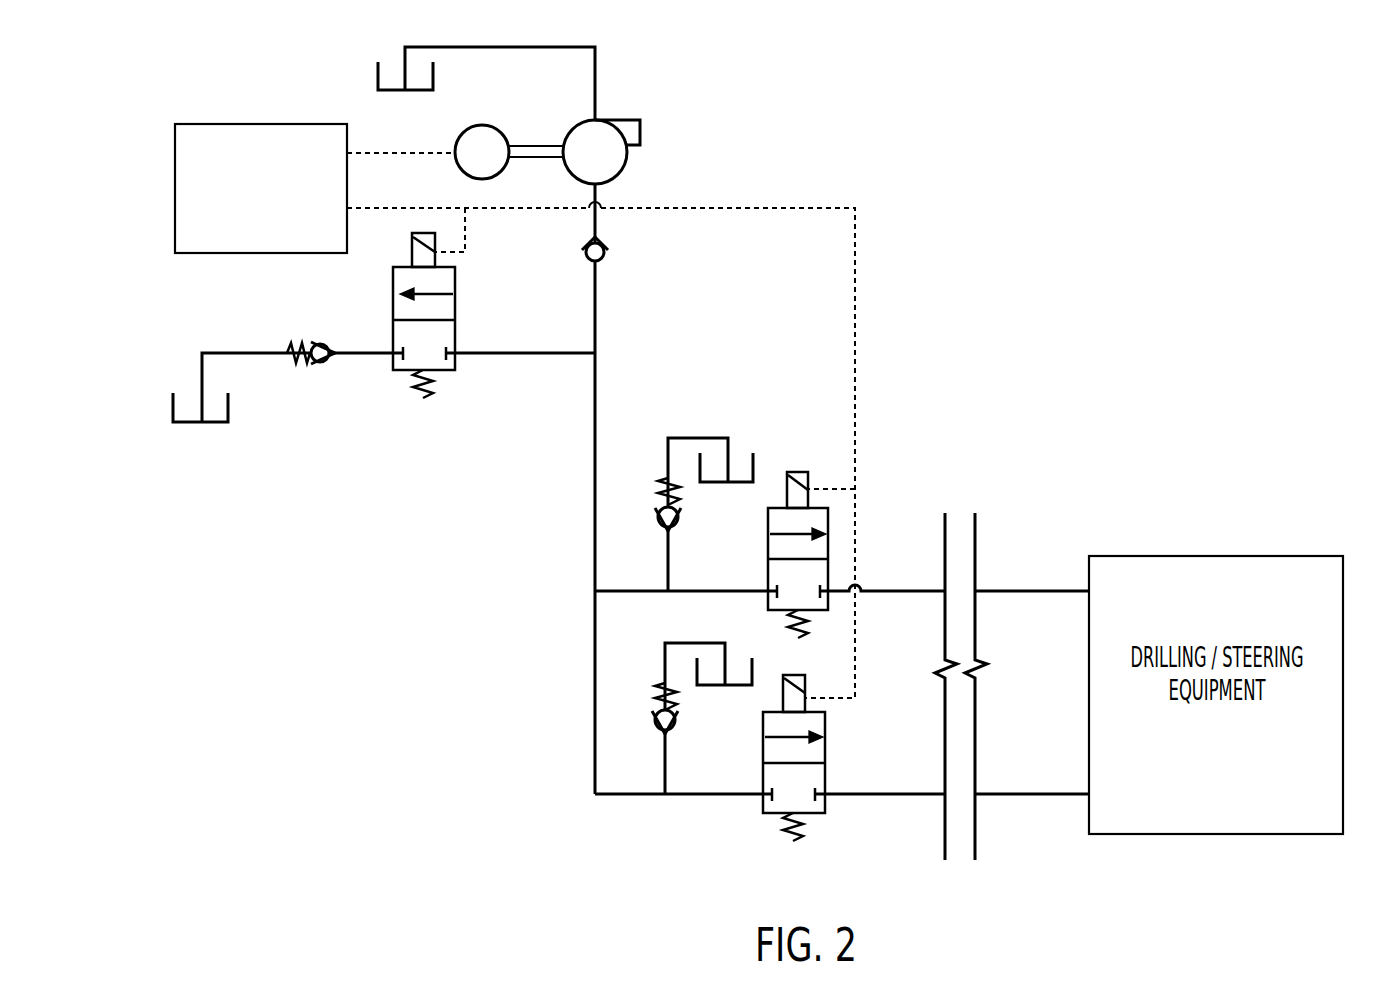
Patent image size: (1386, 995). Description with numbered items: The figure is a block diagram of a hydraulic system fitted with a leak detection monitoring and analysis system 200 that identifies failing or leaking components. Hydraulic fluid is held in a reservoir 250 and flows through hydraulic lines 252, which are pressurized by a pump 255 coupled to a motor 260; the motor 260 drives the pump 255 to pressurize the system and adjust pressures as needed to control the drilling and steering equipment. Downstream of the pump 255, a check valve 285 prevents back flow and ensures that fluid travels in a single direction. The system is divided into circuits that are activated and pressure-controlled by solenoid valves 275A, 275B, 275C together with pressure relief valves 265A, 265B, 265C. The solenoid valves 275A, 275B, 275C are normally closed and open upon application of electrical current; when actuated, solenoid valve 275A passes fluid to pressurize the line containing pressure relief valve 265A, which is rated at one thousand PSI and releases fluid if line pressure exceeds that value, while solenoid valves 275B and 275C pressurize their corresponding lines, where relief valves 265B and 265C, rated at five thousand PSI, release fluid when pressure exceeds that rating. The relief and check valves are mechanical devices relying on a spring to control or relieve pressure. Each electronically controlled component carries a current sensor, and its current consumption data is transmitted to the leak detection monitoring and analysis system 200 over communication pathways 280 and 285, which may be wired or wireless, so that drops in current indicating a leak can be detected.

The leak detection monitoring and analysis system 200 is at (185, 123).
The reservoir 250 is at (377, 73).
The hydraulic lines 252 is at (598, 77).
The pump 255 is at (623, 165).
The motor 260 is at (490, 127).
The communication pathway 280 is at (380, 155).
The check valve 285 is at (828, 203).
The pressure relief valve 265A is at (295, 338).
The solenoid valve 275A is at (455, 320).
The pressure relief valve 265B is at (678, 495).
The solenoid valve 275B is at (828, 558).
The pressure relief valve 265C is at (675, 697).
The solenoid valve 275C is at (825, 760).